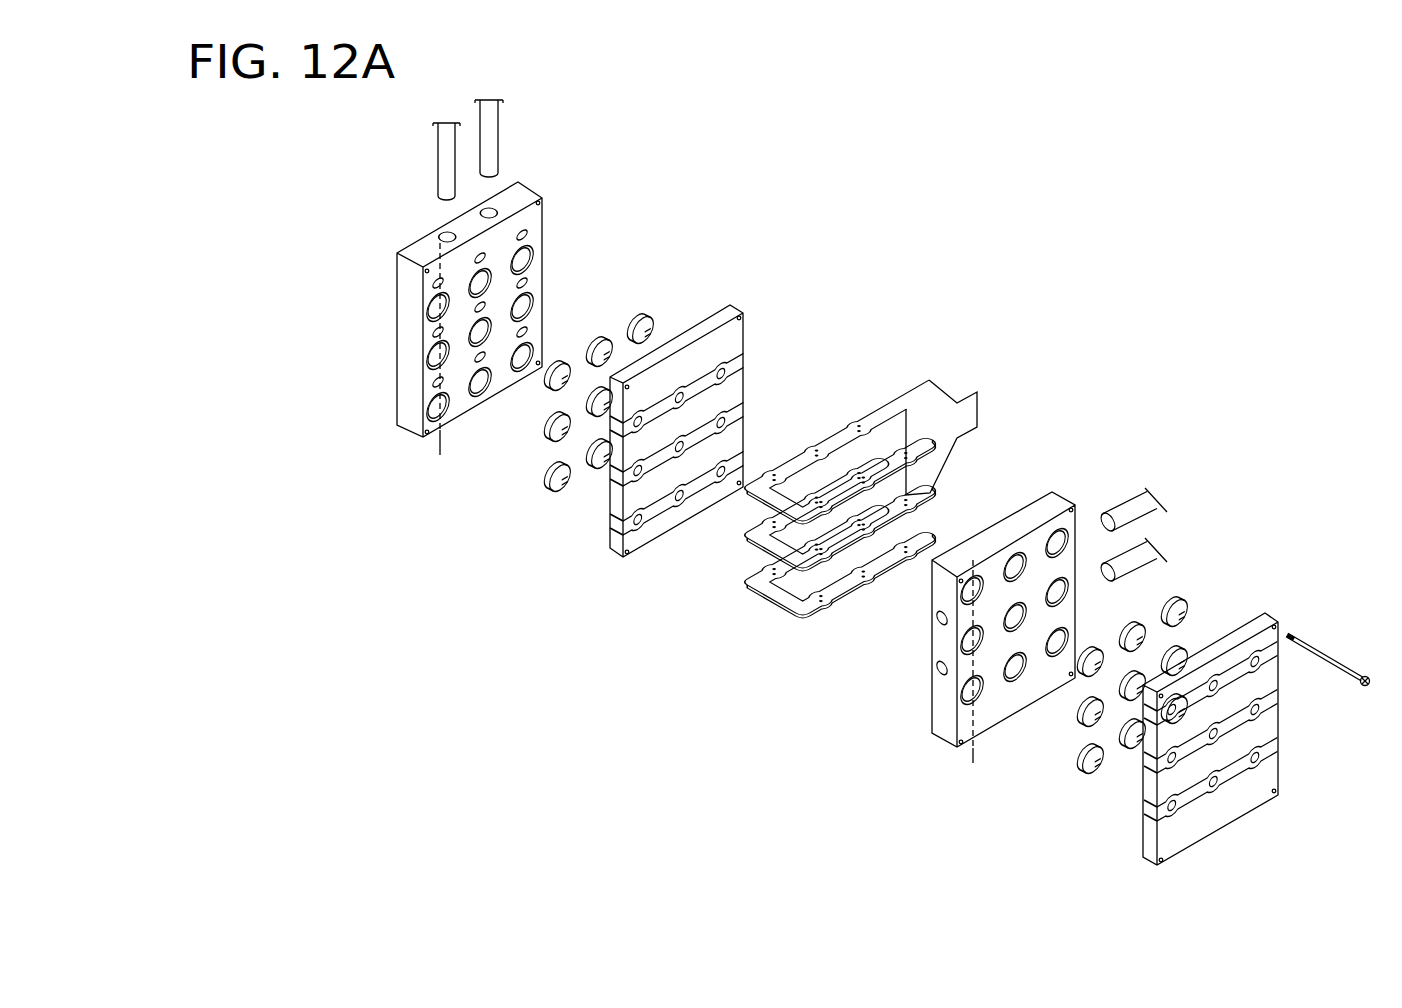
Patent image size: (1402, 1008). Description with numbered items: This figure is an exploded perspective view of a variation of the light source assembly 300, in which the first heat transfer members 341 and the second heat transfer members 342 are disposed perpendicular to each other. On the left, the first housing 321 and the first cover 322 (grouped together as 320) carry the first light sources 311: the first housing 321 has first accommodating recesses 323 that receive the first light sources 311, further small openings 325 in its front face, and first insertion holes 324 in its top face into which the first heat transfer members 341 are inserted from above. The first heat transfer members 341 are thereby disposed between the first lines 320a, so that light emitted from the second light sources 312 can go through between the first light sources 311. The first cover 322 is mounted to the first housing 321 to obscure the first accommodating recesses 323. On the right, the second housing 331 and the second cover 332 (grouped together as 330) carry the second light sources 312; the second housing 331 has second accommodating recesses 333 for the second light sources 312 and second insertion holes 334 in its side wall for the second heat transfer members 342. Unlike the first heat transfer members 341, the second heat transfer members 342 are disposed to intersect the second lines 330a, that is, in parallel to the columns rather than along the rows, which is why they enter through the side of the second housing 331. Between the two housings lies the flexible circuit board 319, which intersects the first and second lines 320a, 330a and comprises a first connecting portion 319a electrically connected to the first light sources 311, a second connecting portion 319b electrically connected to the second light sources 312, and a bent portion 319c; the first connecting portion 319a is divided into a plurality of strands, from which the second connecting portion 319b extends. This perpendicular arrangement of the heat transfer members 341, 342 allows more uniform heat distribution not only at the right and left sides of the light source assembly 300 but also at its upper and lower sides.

The light source assembly 300 is at (1205, 331).
The first light sources 311 is at (642, 318).
The second light sources 312 is at (1183, 604).
The flexible circuit board 319 is at (948, 392).
The first connecting portion 319a is at (833, 425).
The second connecting portion 319b is at (845, 598).
The bent portion 319c is at (763, 614).
The first housing 320 is at (533, 587).
The first lines 320a is at (441, 441).
The first housing 321 is at (416, 430).
The first cover 322 is at (613, 502).
The first accommodating recesses 323 is at (523, 259).
The first insertion holes 324 is at (446, 233).
The slot 325 is at (527, 236).
The second housing 330 is at (858, 770).
The second lines 330a is at (975, 750).
The second housing 331 is at (946, 730).
The second cover 332 is at (1150, 843).
The second accommodating recesses 333 is at (1055, 540).
The second insertion holes 334 is at (938, 672).
The first heat transfer member 341 is at (495, 133).
The second heat transfer member 342 is at (1130, 496).